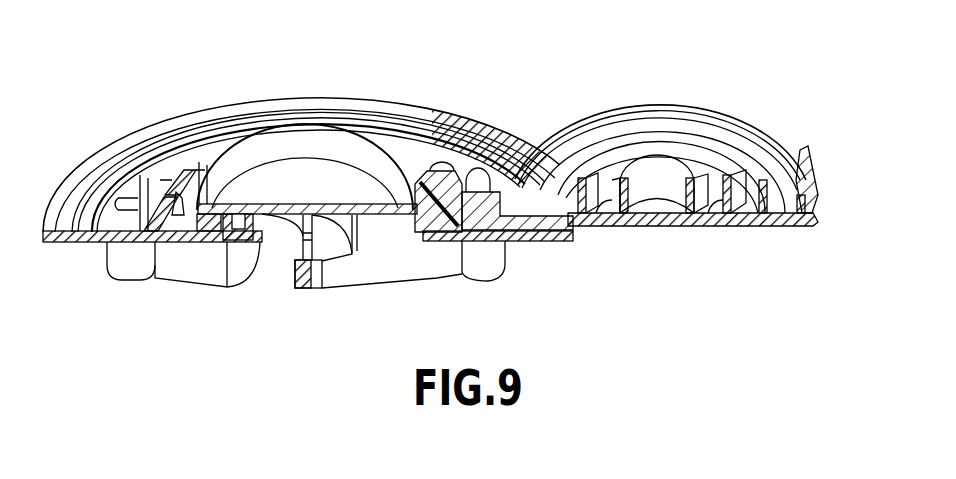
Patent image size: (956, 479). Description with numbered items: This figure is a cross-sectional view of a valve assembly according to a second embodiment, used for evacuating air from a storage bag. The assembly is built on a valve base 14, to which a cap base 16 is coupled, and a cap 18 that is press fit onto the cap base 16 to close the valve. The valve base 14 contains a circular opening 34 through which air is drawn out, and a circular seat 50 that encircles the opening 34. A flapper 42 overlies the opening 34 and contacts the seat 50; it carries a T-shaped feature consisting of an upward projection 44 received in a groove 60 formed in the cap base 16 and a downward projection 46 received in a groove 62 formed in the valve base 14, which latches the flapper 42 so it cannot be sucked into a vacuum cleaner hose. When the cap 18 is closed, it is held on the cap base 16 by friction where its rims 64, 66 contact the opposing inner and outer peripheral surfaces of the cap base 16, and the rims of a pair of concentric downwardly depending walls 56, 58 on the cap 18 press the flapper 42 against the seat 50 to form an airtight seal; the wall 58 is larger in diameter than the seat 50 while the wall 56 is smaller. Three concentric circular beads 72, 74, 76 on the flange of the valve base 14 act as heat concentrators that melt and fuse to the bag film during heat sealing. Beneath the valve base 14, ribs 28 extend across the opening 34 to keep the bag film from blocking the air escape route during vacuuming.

The valve base 14 is at (78, 246).
The cap base 16 is at (205, 121).
The cap 18 is at (718, 224).
The ribs 28 is at (350, 288).
The opening 34 is at (262, 228).
The flapper 42 is at (295, 204).
The upward projection 44 is at (470, 163).
The downward projection 46 is at (460, 240).
The circular seat 50 is at (257, 210).
The downwardly depending wall 56 is at (654, 155).
The downwardly depending wall 58 is at (697, 147).
The groove 60 is at (420, 165).
The groove 62 is at (428, 238).
The rim 64 is at (724, 140).
The rim 66 is at (790, 140).
The circular bead 72 is at (83, 163).
The circular bead 74 is at (86, 172).
The circular bead 76 is at (118, 180).